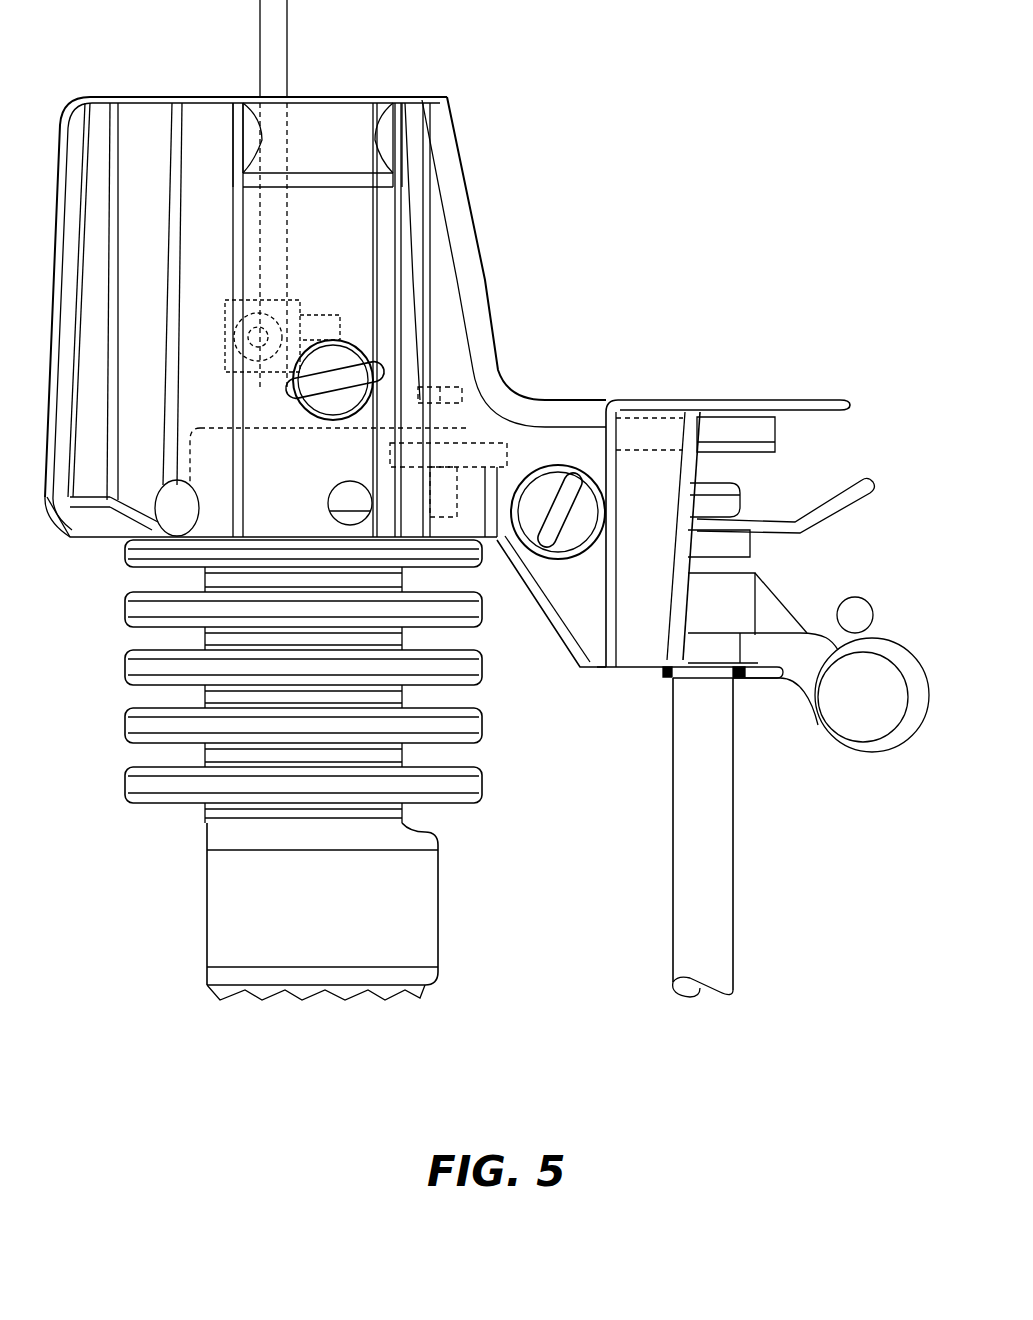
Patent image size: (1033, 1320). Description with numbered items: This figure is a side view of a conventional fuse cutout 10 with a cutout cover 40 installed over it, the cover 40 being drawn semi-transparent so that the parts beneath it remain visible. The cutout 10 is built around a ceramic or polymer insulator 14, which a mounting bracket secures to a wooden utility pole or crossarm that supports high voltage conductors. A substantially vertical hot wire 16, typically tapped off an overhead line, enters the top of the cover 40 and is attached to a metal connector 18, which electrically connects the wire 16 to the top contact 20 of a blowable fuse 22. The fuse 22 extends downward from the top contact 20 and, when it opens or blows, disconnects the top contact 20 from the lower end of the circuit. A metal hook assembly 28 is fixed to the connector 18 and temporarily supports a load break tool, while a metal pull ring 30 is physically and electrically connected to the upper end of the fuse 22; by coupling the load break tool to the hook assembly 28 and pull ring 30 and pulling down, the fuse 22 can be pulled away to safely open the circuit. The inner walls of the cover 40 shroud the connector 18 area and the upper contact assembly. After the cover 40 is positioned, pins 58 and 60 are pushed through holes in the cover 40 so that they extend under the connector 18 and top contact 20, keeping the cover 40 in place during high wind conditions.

The fuse cutout 10 is at (833, 813).
The insulator 14 is at (125, 612).
The wire 16 is at (289, 52).
The connector 18 is at (300, 330).
The top contact 20 is at (820, 498).
The fuse 22 is at (735, 833).
The hook assembly 28 is at (866, 603).
The pull ring 30 is at (862, 758).
The cover 40 is at (545, 175).
The pin 58 is at (385, 372).
The pin 60 is at (540, 600).